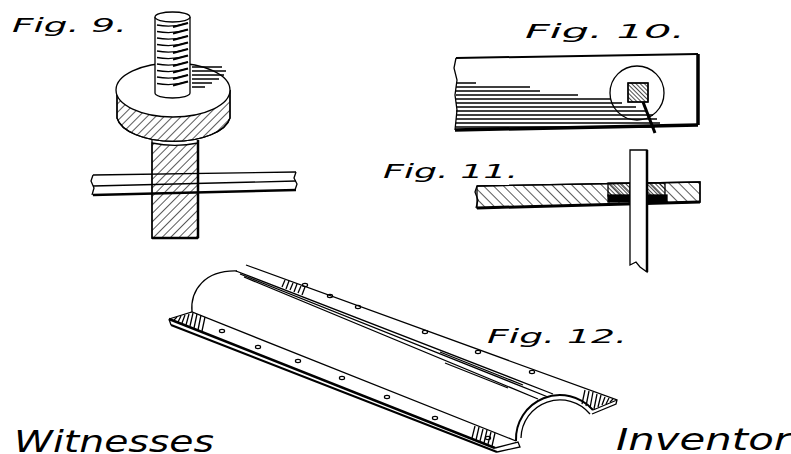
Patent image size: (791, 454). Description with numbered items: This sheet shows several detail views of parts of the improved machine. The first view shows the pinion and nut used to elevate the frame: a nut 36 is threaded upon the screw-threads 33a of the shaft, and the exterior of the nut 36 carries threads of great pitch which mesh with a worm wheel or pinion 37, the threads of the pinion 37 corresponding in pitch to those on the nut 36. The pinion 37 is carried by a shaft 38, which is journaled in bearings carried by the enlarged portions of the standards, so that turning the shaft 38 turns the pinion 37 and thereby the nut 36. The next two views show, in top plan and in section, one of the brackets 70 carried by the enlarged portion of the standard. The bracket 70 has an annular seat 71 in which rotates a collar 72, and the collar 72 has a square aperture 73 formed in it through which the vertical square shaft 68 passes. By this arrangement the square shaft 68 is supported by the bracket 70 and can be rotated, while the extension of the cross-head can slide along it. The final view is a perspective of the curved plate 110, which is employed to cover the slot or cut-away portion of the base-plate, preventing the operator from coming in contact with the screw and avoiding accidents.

In FIG. 9, the threaded stud 33a is at (191, 36).
In FIG. 9, the nut 36 is at (217, 82).
In FIG. 9, the worm wheel or pinion 37 is at (200, 156).
In FIG. 9, the shaft 38 is at (252, 196).
In FIG. 10, the bracket 70 is at (576, 92).
In FIG. 11, the bracket 70 is at (568, 200).
In FIG. 10, the annular seat 71 is at (663, 105).
In FIG. 11, the annular seat 71 is at (668, 184).
In FIG. 10, the collar 72 is at (650, 82).
In FIG. 11, the collar 72 is at (620, 184).
In FIG. 10, the square aperture 73 is at (648, 93).
In FIG. 11, the square aperture 73 is at (653, 183).
In FIG. 10, the vertical square shaft 68 is at (662, 127).
In FIG. 11, the vertical square shaft 68 is at (641, 240).
In FIG. 12, the curved plate 110 is at (393, 358).